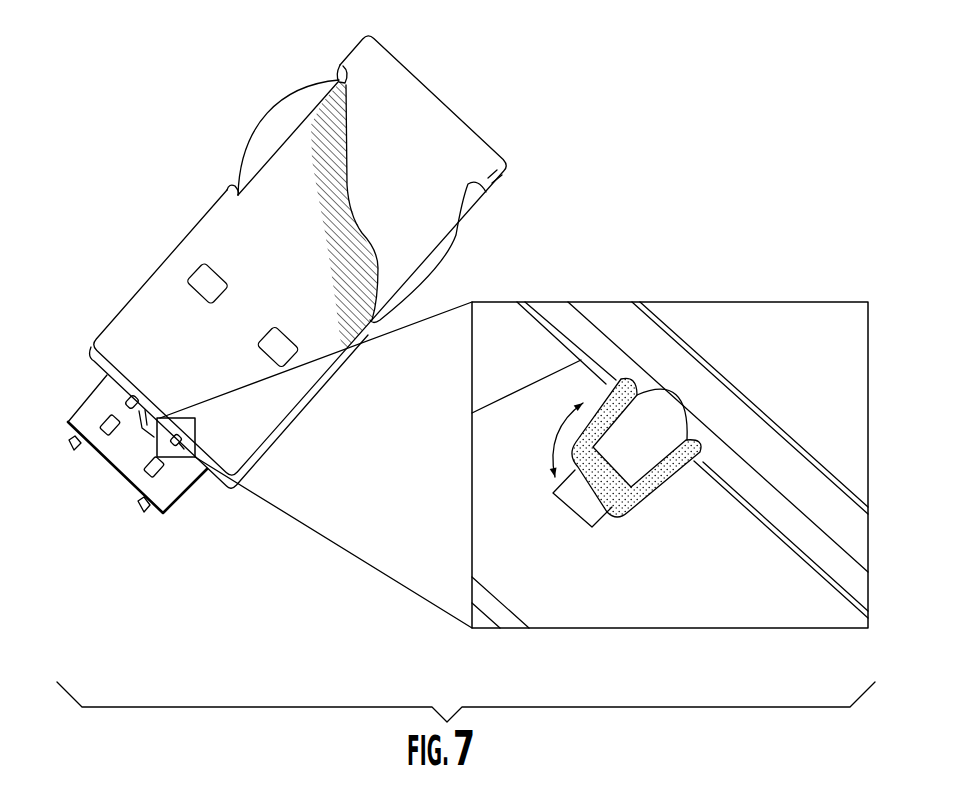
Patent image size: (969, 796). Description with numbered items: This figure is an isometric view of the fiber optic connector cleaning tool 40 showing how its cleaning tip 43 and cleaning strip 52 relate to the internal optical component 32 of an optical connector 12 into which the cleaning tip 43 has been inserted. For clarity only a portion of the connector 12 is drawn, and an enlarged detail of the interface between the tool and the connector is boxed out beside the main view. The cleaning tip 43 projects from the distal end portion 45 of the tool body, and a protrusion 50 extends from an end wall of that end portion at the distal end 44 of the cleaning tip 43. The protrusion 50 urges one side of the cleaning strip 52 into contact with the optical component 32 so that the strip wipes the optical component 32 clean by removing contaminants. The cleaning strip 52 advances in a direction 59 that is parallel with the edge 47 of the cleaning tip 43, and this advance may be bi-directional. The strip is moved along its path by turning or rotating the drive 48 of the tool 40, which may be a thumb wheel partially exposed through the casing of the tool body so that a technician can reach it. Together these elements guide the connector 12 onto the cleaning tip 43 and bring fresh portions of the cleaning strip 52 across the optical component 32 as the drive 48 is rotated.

The male connector 12 is at (58, 432).
The fiber optic connector cleaning tool 40 is at (118, 255).
The drive 48 is at (292, 107).
The direction 59 is at (560, 424).
The protrusion 50 is at (650, 420).
The edge 47 is at (765, 518).
The optical component 32 is at (588, 513).
The cleaning strip 52 is at (658, 488).
The cleaning tip 43 is at (715, 578).
The distal end 44 is at (792, 575).
The distal end portion 45 is at (860, 588).